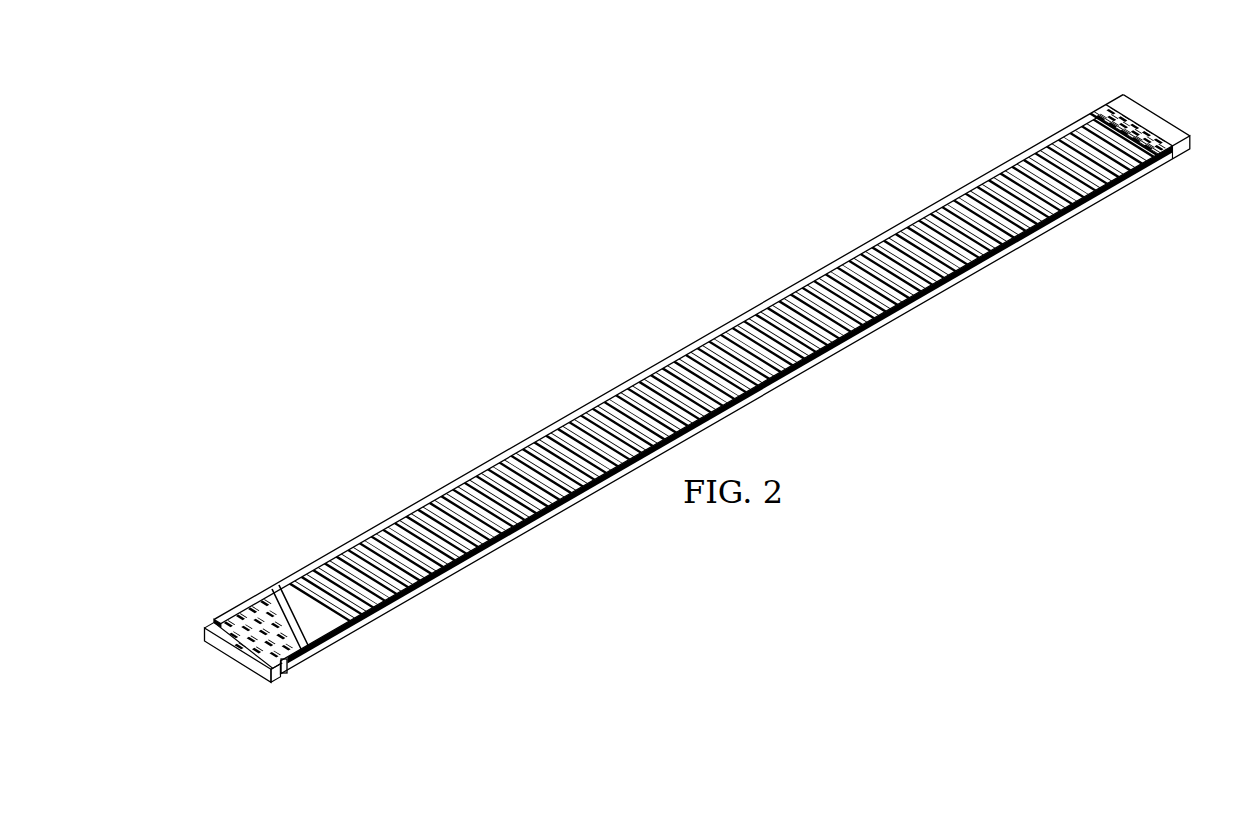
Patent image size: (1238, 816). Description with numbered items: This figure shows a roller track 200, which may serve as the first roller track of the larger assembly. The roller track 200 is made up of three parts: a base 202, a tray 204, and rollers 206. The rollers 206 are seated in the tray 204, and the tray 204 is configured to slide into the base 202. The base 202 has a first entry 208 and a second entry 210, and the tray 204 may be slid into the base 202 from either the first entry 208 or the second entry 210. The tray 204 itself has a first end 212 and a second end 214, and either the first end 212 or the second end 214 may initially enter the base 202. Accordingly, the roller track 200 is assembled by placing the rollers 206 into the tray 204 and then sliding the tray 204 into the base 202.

The roller track 200 is at (695, 370).
The base 202 is at (887, 324).
The tray 204 is at (267, 604).
The rollers 206 is at (723, 343).
The first entry 208 is at (301, 679).
The second entry 210 is at (1171, 169).
The first end 212 is at (1114, 83).
The second end 214 is at (203, 605).